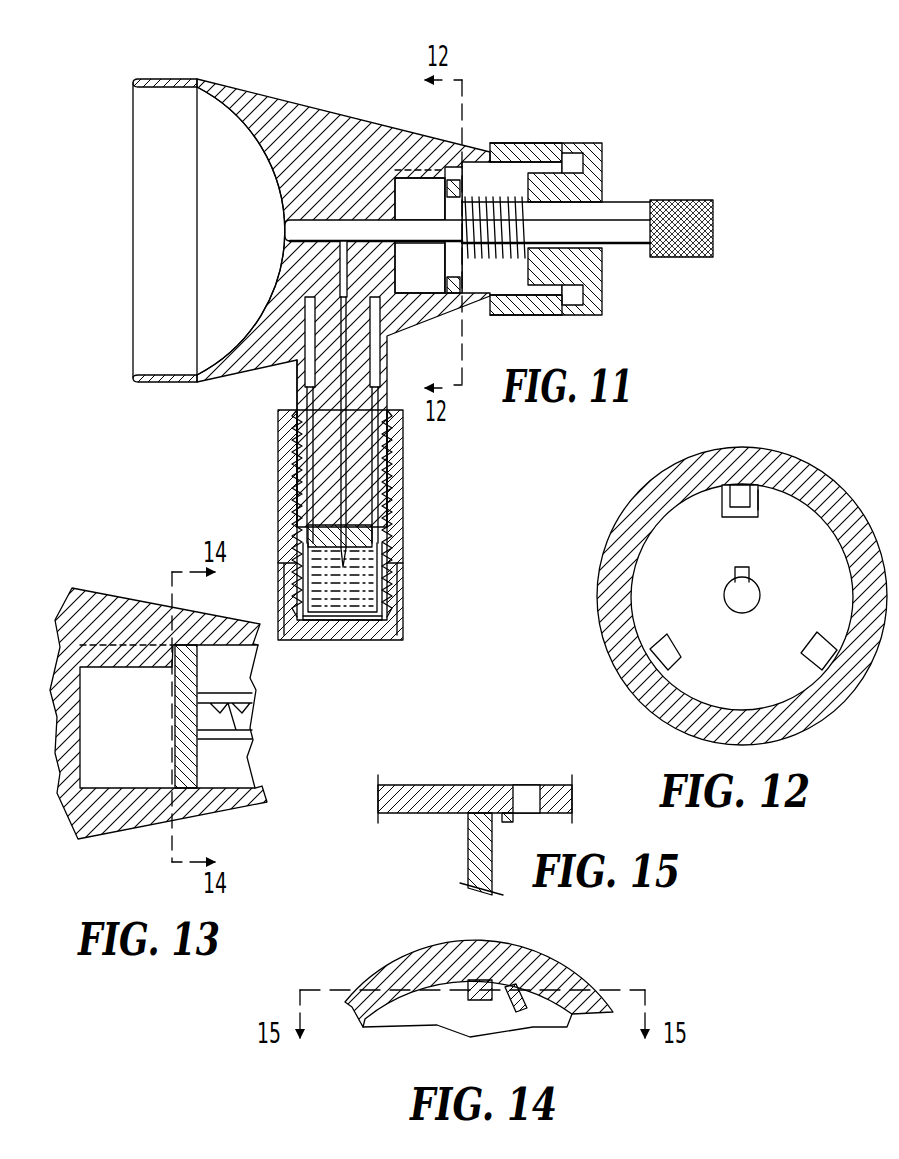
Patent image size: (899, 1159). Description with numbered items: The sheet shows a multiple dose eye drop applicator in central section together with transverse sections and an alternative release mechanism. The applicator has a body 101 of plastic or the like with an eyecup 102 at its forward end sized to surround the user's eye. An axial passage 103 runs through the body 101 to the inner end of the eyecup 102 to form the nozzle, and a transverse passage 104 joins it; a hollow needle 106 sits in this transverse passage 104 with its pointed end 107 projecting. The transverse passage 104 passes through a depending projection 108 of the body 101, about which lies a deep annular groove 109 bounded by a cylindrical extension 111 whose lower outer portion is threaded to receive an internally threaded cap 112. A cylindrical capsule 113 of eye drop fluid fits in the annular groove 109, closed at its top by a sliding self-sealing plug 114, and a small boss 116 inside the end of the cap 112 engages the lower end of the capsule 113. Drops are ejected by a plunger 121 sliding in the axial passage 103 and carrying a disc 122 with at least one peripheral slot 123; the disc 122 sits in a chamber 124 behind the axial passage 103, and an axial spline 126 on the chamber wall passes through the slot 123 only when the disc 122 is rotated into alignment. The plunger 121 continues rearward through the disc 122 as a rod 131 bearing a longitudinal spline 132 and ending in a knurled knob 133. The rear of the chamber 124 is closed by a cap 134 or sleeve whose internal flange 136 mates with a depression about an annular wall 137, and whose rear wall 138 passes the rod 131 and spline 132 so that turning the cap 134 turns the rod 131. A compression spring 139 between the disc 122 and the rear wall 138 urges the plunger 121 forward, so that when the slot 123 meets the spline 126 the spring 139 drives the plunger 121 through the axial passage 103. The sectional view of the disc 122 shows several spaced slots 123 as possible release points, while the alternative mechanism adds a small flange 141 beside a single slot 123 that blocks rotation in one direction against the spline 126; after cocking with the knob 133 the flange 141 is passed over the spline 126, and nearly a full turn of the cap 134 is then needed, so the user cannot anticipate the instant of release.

In FIG. 11, the body 101 is at (263, 98).
In FIG. 11, the eyecup 102 is at (165, 81).
In FIG. 11, the axial passage 103 is at (328, 215).
In FIG. 11, the transverse passage 104 is at (337, 250).
In FIG. 11, the hollow needle 106 is at (343, 270).
In FIG. 11, the pointed end 107 is at (343, 557).
In FIG. 11, the depending projection 108 is at (360, 450).
In FIG. 11, the annular groove 109 is at (308, 363).
In FIG. 11, the cylindrical extension 111 is at (385, 487).
In FIG. 11, the cap 112 is at (293, 608).
In FIG. 13, the cap 112 is at (290, 610).
In FIG. 11, the capsule 113 is at (308, 430).
In FIG. 11, the self-sealing plug 114 is at (313, 540).
In FIG. 11, the boss 116 is at (347, 618).
In FIG. 11, the plunger 121 is at (440, 180).
In FIG. 11, the disc 122 is at (452, 294).
In FIG. 12, the disc 122 is at (647, 600).
In FIG. 13, the disc 122 is at (200, 658).
In FIG. 15, the disc 122 is at (415, 784).
In FIG. 14, the disc 122 is at (543, 1010).
In FIG. 11, the peripheral slot 123 is at (455, 183).
In FIG. 12, the peripheral slot 123 is at (757, 500).
In FIG. 15, the peripheral slot 123 is at (525, 785).
In FIG. 14, the peripheral slot 123 is at (543, 963).
In FIG. 11, the chamber 124 is at (417, 273).
In FIG. 11, the axial spline 126 is at (413, 173).
In FIG. 12, the axial spline 126 is at (740, 490).
In FIG. 15, the axial spline 126 is at (468, 852).
In FIG. 11, the rod 131 is at (610, 228).
In FIG. 11, the spline 132 is at (617, 213).
In FIG. 11, the knob 133 is at (690, 200).
In FIG. 11, the cap 134 is at (618, 296).
In FIG. 11, the internal flange 136 is at (492, 313).
In FIG. 11, the annular wall 137 is at (537, 300).
In FIG. 11, the rear wall 138 is at (593, 167).
In FIG. 11, the compression spring 139 is at (533, 153).
In FIG. 15, the flange 141 is at (508, 820).